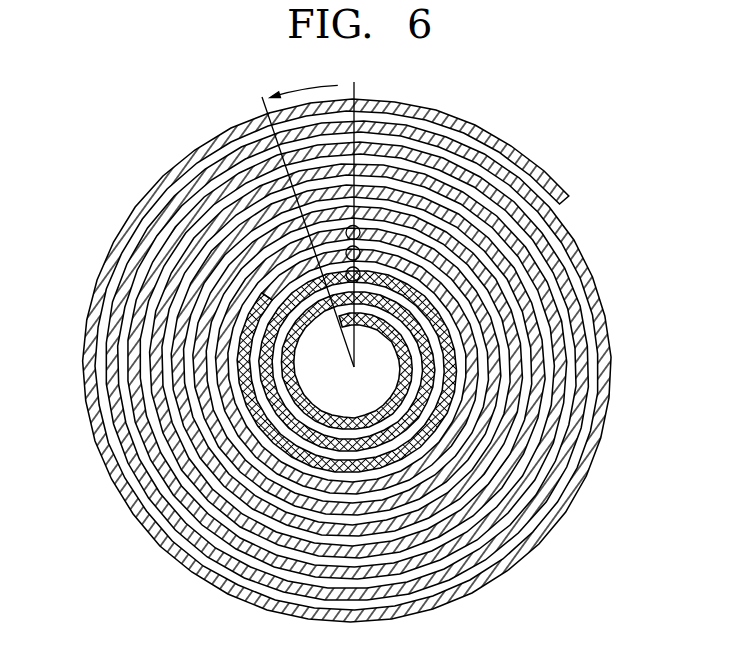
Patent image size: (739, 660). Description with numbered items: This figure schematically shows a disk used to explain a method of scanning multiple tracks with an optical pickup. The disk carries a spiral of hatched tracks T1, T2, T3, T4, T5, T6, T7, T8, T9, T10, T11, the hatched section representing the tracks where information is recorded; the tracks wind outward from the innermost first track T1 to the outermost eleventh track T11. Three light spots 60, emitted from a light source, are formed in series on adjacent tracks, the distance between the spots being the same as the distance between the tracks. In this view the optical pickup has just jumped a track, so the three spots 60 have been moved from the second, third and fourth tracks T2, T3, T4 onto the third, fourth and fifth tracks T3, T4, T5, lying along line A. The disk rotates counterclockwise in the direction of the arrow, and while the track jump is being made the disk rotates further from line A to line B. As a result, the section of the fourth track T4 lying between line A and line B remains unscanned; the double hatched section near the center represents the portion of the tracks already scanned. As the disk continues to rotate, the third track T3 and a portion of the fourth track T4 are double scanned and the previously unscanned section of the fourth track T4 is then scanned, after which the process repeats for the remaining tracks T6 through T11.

The light spots 60 is at (346, 232).
The first track T1 is at (350, 319).
The second track T2 is at (350, 297).
The third track T3 is at (350, 276).
The fourth track T4 is at (350, 254).
The fifth track T5 is at (350, 233).
The sixth track T6 is at (350, 212).
The seventh track T7 is at (350, 190).
The eighth track T8 is at (350, 169).
The ninth track T9 is at (350, 147).
The tenth track T10 is at (350, 126).
The eleventh track T11 is at (350, 105).
The line A is at (367, 217).
The line B is at (296, 225).